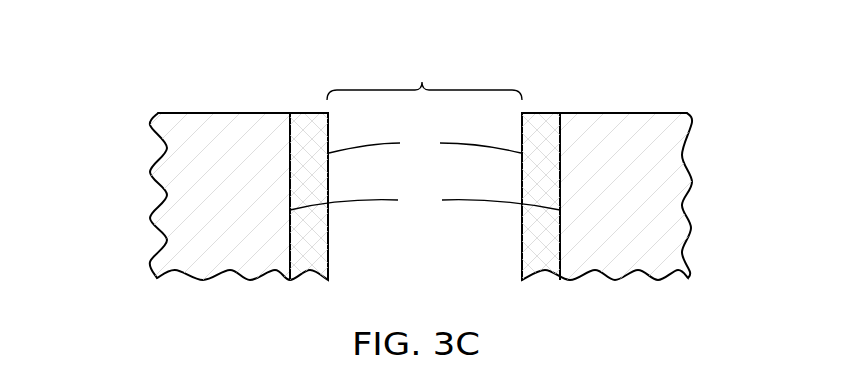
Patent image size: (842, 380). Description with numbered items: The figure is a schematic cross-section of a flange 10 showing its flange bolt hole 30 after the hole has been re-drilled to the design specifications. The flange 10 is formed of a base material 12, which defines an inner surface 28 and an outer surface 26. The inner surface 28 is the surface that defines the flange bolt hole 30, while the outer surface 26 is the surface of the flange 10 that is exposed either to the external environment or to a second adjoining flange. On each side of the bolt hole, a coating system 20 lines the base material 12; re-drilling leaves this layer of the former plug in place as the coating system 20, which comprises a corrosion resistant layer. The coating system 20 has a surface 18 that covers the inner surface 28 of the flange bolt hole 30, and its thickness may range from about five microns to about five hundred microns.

The flange 10 is at (148, 89).
The base material 12 is at (167, 186).
The surface 18 is at (521, 153).
The coating system 20 is at (302, 117).
The outer surface 26 is at (245, 109).
The inner surface 28 is at (560, 210).
The flange bolt hole 30 is at (422, 80).